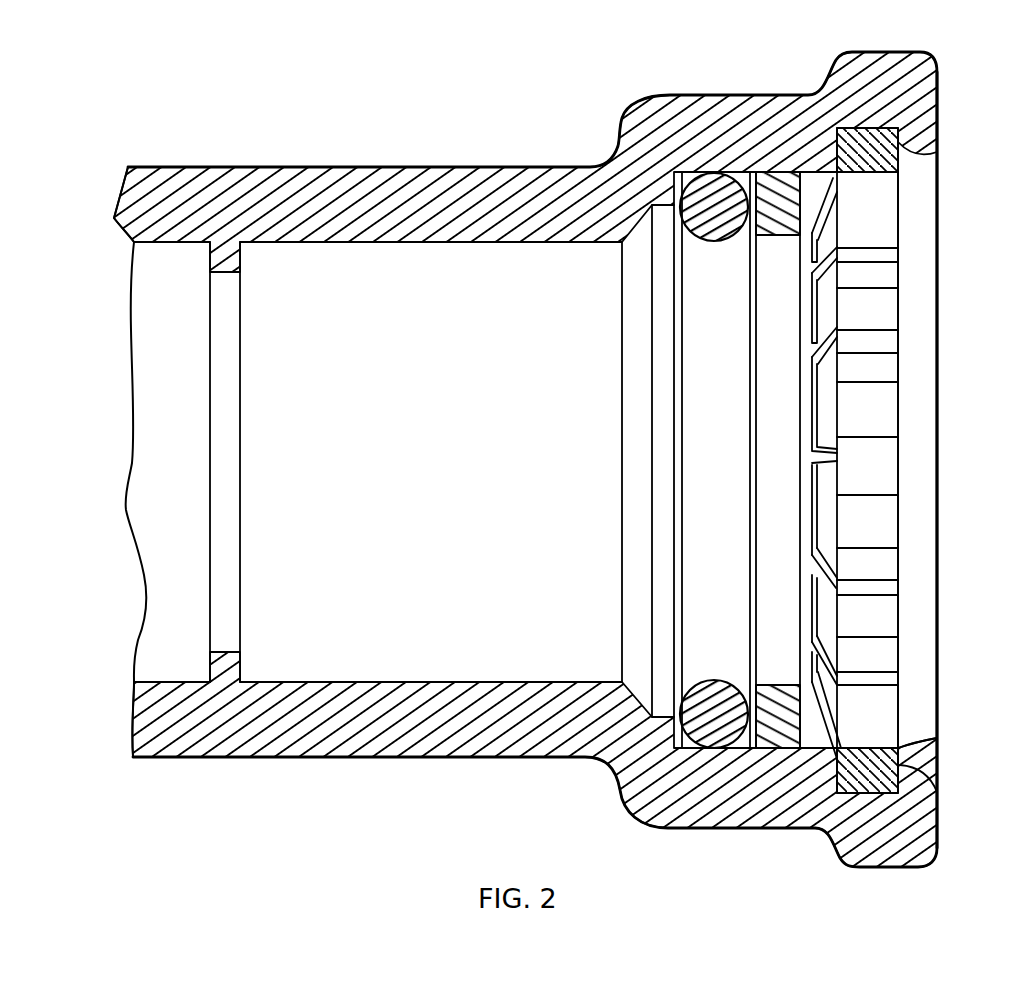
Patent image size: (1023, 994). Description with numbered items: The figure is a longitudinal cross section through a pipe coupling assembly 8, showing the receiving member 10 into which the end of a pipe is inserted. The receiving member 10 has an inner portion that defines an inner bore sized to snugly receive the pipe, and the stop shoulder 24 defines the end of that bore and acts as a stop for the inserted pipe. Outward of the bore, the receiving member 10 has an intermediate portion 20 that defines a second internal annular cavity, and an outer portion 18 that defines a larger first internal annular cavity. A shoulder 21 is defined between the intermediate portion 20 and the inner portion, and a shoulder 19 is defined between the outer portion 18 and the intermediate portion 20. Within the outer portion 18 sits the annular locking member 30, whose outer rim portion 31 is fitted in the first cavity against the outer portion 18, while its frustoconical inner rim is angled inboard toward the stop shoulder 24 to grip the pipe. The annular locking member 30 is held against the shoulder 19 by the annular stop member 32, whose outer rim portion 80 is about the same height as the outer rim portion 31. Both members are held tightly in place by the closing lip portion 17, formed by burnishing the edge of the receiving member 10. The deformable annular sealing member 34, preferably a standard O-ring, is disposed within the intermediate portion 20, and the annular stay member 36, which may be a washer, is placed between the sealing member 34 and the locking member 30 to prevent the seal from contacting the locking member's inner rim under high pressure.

The pipe coupling assembly 8 is at (525, 141).
The receiving member 10 is at (428, 167).
The closing lip portion 17 is at (898, 142).
The outer portion 18 is at (838, 128).
The shoulder 19 is at (823, 172).
The intermediate portion 20 is at (753, 172).
The shoulder 21 is at (673, 177).
The stop shoulder 24 is at (224, 273).
The annular locking member 30 is at (830, 293).
The outer rim portion 31 is at (837, 160).
The annular stop member 32 is at (877, 410).
The deformable annular sealing member 34 is at (700, 607).
The annular stay member 36 is at (770, 510).
The outer rim portion 80 is at (937, 738).